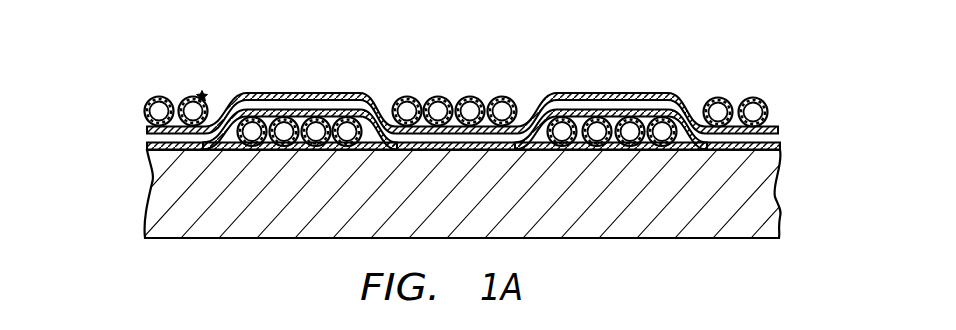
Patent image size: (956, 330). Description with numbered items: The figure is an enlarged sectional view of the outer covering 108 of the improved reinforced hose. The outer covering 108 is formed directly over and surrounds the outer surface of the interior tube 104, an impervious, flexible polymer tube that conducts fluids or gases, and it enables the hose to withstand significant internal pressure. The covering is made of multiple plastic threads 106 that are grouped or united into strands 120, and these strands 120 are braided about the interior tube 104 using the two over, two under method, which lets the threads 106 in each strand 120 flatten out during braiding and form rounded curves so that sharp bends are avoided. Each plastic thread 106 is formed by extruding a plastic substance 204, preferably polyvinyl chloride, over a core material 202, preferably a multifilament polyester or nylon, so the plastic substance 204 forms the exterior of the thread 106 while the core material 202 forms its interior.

The interior tube 104 is at (777, 197).
The plastic thread 106 is at (782, 138).
The outer covering 108 is at (137, 93).
The strand 120 is at (595, 92).
The core material 202 is at (204, 93).
The plastic substance 204 is at (160, 94).